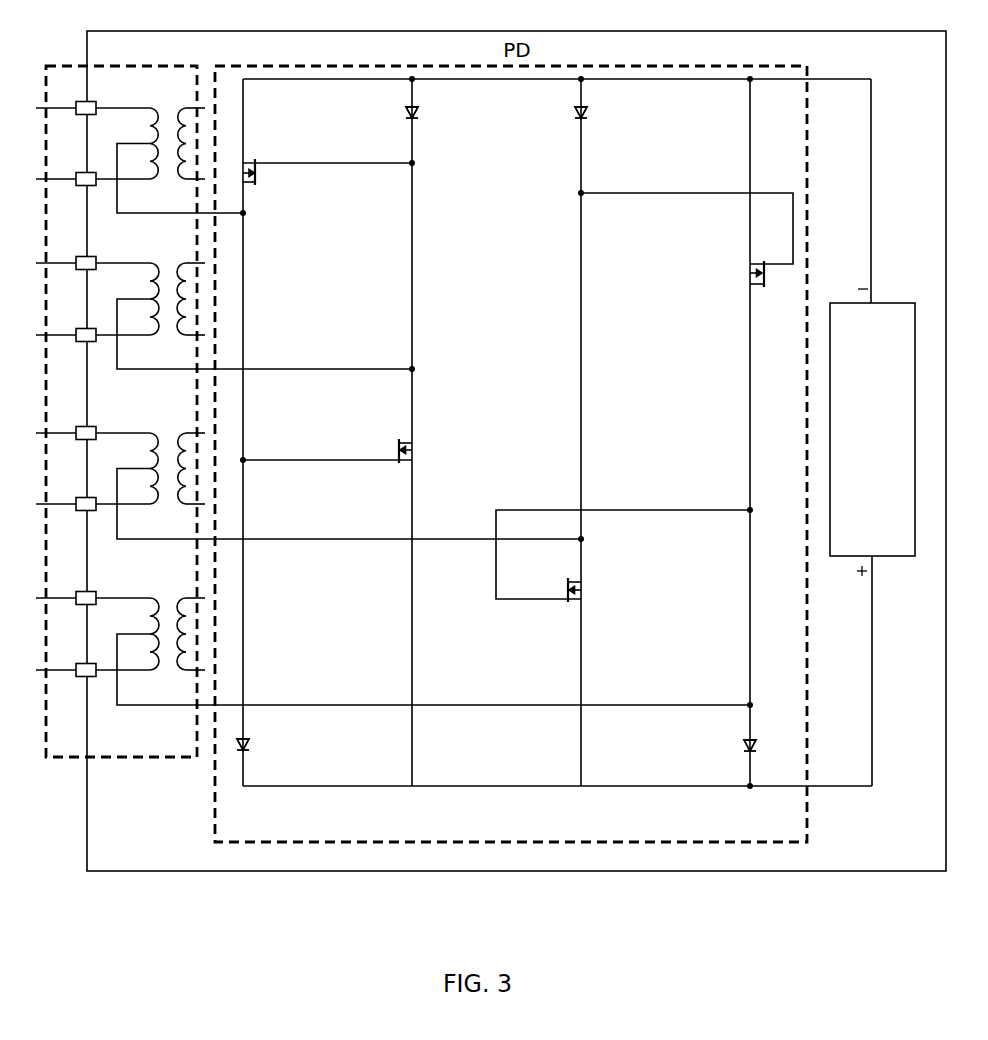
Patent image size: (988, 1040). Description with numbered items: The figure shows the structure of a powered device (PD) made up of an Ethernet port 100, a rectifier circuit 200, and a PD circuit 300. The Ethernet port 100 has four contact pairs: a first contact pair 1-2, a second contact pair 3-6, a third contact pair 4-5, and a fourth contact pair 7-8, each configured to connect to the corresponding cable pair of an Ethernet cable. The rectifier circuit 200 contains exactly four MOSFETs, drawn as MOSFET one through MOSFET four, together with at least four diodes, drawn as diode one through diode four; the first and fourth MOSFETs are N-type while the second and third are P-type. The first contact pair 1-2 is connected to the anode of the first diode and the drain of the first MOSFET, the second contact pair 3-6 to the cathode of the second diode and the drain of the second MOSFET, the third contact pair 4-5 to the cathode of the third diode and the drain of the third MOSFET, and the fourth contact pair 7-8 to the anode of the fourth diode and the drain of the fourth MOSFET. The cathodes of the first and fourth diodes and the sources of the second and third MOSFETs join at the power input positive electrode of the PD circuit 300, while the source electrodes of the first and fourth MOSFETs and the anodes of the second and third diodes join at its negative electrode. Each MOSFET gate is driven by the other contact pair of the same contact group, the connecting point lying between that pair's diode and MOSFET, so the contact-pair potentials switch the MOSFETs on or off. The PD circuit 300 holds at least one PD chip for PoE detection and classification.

The Ethernet port 100 is at (393, 411).
The rectifier circuit 200 is at (543, 454).
The PD circuit 300 is at (872, 432).
The first contact pair contact 1 is at (93, 98).
The first contact pair contact 2 is at (93, 169).
The second contact pair contact 3 is at (93, 253).
The third contact pair contact 4 is at (93, 423).
The third contact pair contact 5 is at (93, 494).
The second contact pair contact 6 is at (93, 325).
The fourth contact pair contact 7 is at (93, 588).
The fourth contact pair contact 8 is at (93, 660).